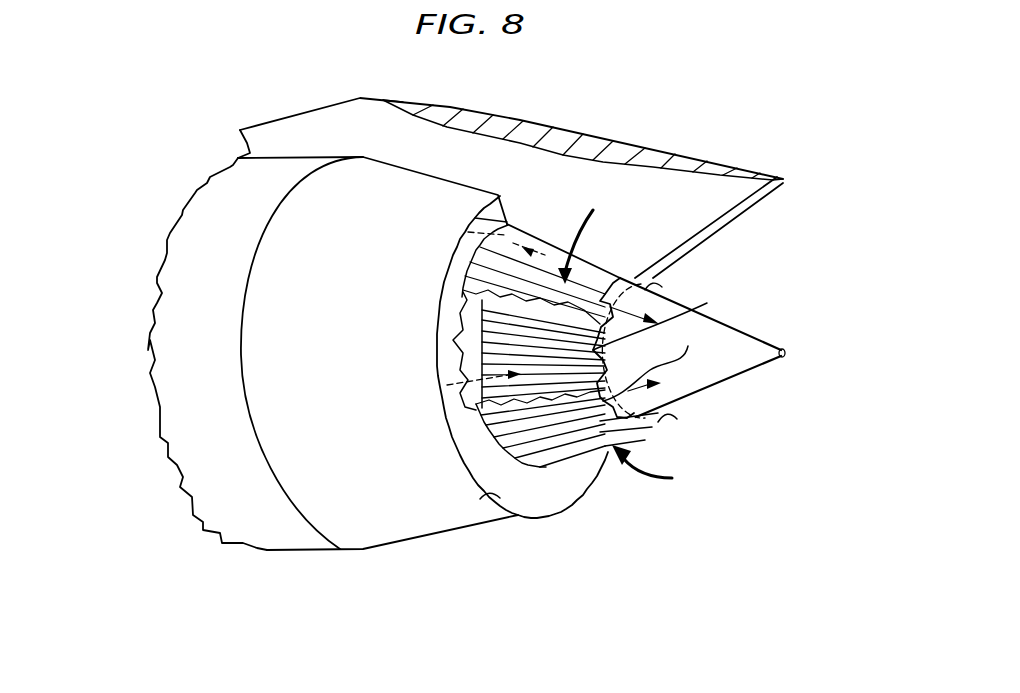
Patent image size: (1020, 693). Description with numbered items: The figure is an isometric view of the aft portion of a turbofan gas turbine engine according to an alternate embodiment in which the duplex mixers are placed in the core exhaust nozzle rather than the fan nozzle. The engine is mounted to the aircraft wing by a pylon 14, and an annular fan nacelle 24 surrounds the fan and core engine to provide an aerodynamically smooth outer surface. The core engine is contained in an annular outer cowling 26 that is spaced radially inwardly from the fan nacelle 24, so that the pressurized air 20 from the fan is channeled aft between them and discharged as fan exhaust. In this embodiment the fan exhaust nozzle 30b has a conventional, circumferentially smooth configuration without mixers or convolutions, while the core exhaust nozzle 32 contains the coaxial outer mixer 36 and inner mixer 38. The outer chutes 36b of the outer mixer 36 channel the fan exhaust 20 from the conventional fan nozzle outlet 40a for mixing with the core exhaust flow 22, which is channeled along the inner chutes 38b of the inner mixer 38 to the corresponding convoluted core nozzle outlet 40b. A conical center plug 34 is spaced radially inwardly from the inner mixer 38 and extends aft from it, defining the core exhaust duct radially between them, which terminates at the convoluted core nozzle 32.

The pylon 14 is at (669, 219).
The pressurized air 20 is at (510, 232).
The core exhaust flow 22 is at (652, 362).
The fan nacelle 24 is at (212, 335).
The outer cowling 26 is at (453, 420).
The fan exhaust nozzle 30b is at (407, 267).
The core exhaust nozzle 32 is at (650, 453).
The conical center plug 34 is at (737, 362).
The outer mixer 36 is at (548, 306).
The outer chutes 36b is at (573, 435).
The inner mixer 38 is at (505, 360).
The inner chutes 38b is at (693, 300).
The fan nozzle outlet 40a is at (497, 500).
The core nozzle outlet 40b is at (668, 422).